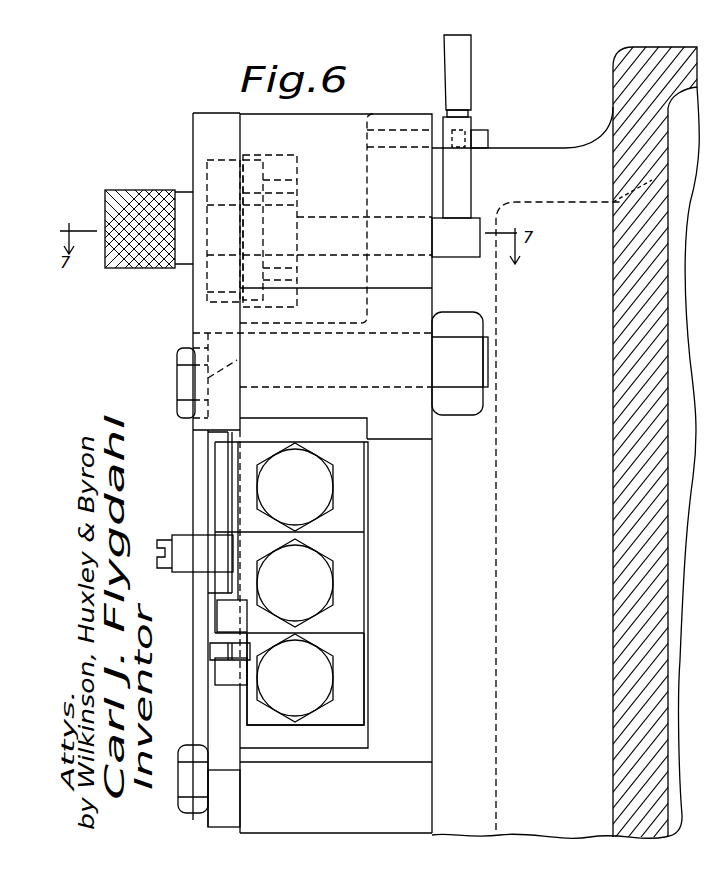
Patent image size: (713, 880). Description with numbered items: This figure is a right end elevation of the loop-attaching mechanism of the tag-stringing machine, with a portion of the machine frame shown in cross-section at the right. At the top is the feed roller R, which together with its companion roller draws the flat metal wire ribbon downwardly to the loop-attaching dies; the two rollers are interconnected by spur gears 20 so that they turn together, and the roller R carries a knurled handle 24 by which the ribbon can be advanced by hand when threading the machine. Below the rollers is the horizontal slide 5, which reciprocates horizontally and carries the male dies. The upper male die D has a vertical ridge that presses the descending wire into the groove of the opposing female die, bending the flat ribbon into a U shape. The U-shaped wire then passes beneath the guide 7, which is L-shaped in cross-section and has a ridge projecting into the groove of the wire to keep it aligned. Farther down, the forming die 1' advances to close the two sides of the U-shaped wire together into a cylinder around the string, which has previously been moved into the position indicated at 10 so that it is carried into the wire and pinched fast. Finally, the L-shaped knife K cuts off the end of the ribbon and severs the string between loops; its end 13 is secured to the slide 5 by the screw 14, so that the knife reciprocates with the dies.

The knurled handle 24 is at (116, 192).
The feed roller R is at (215, 180).
The spur gears 20 is at (290, 198).
The horizontal slide 5 is at (337, 433).
The male die D is at (350, 481).
The forming die 1' is at (327, 583).
The screw 14 is at (295, 678).
The end of cutter 13 is at (352, 662).
The guide 7 is at (180, 547).
The string position 10 is at (215, 658).
The knife K is at (222, 677).